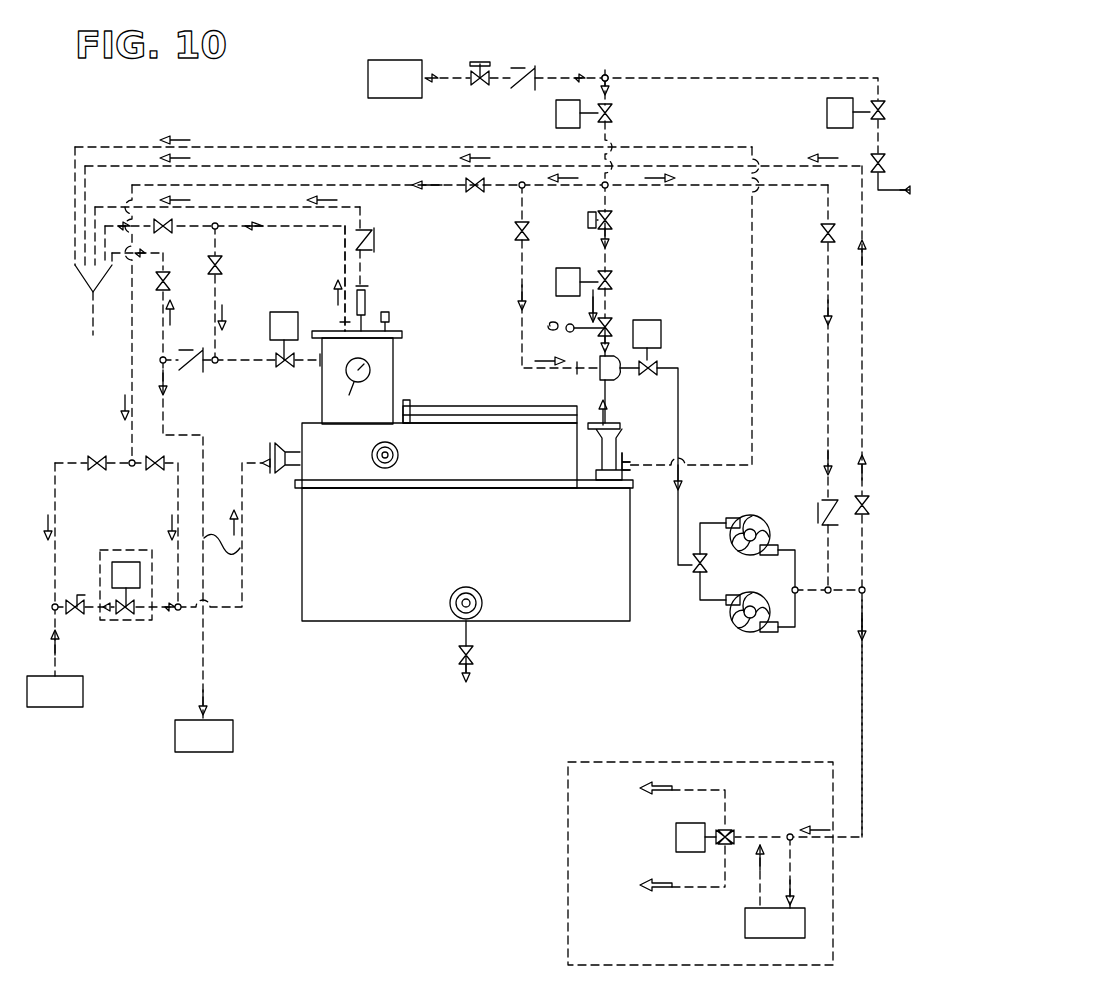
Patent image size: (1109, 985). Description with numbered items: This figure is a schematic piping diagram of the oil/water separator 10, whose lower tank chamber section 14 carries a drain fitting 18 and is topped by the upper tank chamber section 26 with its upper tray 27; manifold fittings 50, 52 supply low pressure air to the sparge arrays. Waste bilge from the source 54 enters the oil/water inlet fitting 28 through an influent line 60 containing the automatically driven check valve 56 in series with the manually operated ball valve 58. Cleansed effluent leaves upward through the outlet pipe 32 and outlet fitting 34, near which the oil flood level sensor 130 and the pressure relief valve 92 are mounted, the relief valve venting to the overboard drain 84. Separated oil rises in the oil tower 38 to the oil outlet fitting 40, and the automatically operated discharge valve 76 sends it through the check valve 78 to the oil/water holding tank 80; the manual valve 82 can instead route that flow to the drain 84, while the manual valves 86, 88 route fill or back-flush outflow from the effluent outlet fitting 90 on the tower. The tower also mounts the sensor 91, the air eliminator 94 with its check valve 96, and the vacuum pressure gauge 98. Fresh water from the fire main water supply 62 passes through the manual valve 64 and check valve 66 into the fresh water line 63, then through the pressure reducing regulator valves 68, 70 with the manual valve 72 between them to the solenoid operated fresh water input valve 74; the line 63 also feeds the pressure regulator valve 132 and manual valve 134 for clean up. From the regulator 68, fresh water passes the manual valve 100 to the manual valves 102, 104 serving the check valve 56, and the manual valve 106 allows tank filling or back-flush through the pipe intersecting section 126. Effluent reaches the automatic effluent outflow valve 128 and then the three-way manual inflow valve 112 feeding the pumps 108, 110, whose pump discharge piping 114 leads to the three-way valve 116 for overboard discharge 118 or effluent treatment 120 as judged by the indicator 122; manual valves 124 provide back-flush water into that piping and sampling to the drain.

The oil/water separator 10 is at (350, 622).
The lower tank chamber section 14 is at (368, 571).
The drain fitting 18 is at (476, 660).
The upper tank chamber section 26 is at (500, 471).
The upper tray 27 is at (478, 407).
The oil/water inlet fitting 28 is at (285, 478).
The outlet pipe 32 is at (615, 450).
The outlet fitting 34 is at (605, 484).
The oil tower 38 is at (398, 382).
The oil outlet fitting 40 is at (310, 370).
The manifold fitting 50 is at (484, 602).
The manifold fitting 52 is at (400, 450).
The waste bilge source 54 is at (65, 710).
The automatically driven check valve 56 is at (123, 625).
The manually operated ball valve 58 is at (78, 612).
The influent line 60 is at (222, 554).
The fire main water supply 62 is at (368, 58).
The fresh water line 63 is at (593, 72).
The manually operated valve 64 is at (488, 72).
The check valve 66 is at (530, 68).
The pressure reducing regulator valve 68 is at (617, 117).
The pressure reducing regulator valve 70 is at (617, 282).
The manual valve 72 is at (617, 223).
The solenoid operated fresh water input valve 74 is at (617, 323).
The automatically operated discharge valve 76 is at (268, 370).
The check valve 78 is at (192, 372).
The oil/water holding tank 80 is at (238, 727).
The manually operated valve 82 is at (168, 273).
The overboard drain 84 is at (82, 295).
The manually operated valve 86 is at (178, 222).
The manual valve 88 is at (225, 264).
The effluent outlet fitting 90 is at (343, 325).
The sensor 91 is at (393, 316).
The pressure relief valve 92 is at (632, 462).
The air eliminator 94 is at (372, 292).
The check valve 96 is at (378, 240).
The vacuum pressure gauge 98 is at (352, 388).
The manual valve 100 is at (476, 195).
The manual valve 102 is at (93, 456).
The manual valve 104 is at (150, 470).
The manual valve 106 is at (530, 232).
The pump 108 is at (768, 518).
The pump 110 is at (775, 588).
The 3-way manual inflow valve 112 is at (692, 578).
The pump discharge piping 114 is at (868, 638).
The 3-way valve 116 is at (735, 830).
The overboard discharge 118 is at (658, 794).
The effluent treatment 120 is at (658, 893).
The indicator 122 is at (835, 495).
The manual valve 124 is at (820, 235).
The check valve / pipe intersecting section 126 is at (623, 380).
The automatic effluent outflow valve 128 is at (660, 356).
The oil flood level sensor 130 is at (580, 462).
The pressure regulator valve 132 is at (885, 100).
The manual valve 134 is at (885, 153).